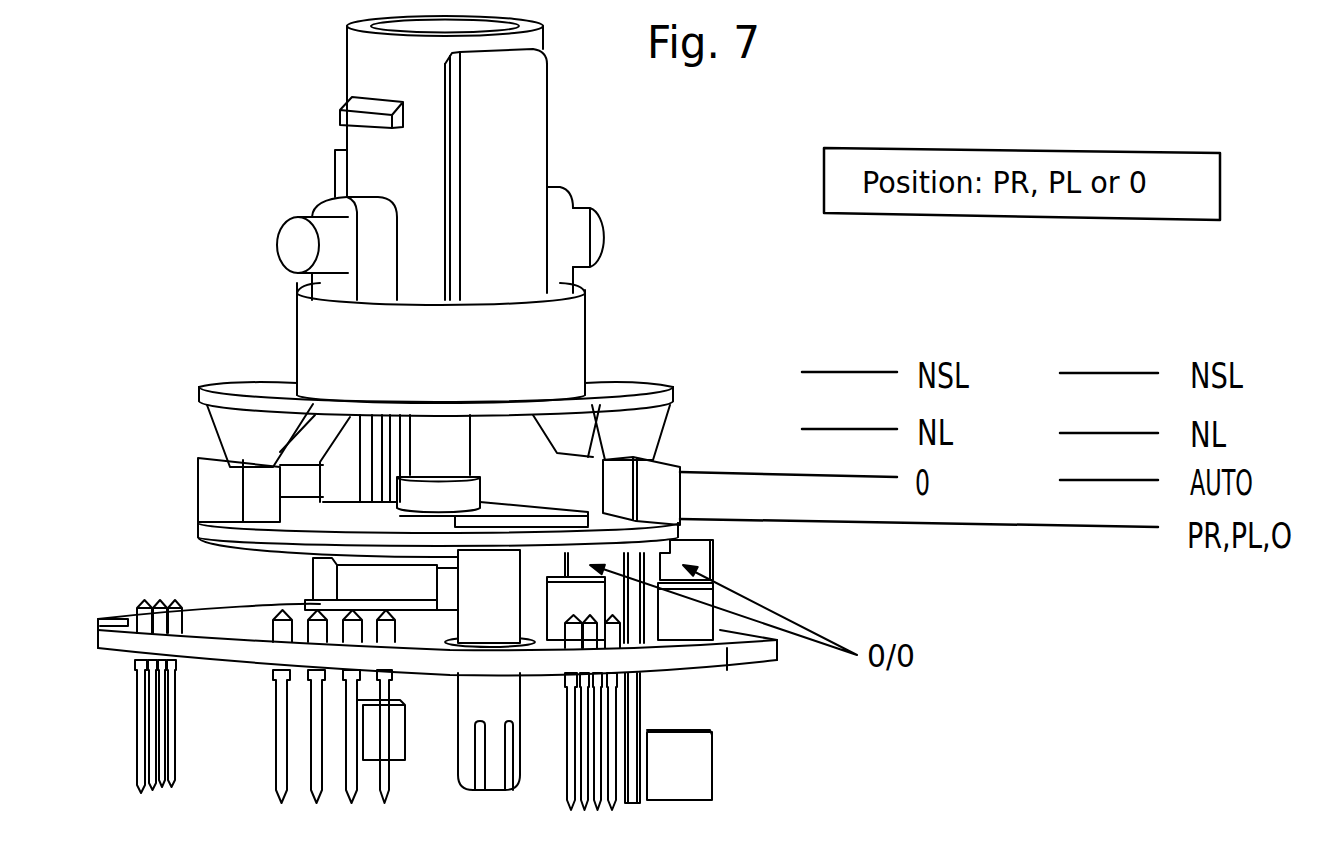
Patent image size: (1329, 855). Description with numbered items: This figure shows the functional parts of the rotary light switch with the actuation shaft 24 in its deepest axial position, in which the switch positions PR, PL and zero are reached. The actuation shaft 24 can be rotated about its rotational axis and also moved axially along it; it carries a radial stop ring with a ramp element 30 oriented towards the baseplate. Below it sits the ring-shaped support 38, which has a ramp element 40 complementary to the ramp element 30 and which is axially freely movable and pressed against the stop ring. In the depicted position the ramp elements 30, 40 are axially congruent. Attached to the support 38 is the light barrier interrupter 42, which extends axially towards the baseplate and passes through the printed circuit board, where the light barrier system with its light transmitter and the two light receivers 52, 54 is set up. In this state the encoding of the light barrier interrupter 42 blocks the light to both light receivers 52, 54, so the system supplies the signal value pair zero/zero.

The actuation shaft 24 is at (530, 110).
The ramp element 30 is at (228, 423).
The ramp element 40 is at (213, 482).
The ring-shaped support 38 is at (203, 530).
The light barrier interrupter 42 is at (705, 557).
The light receiver 52 is at (577, 597).
The light receiver 54 is at (690, 614).